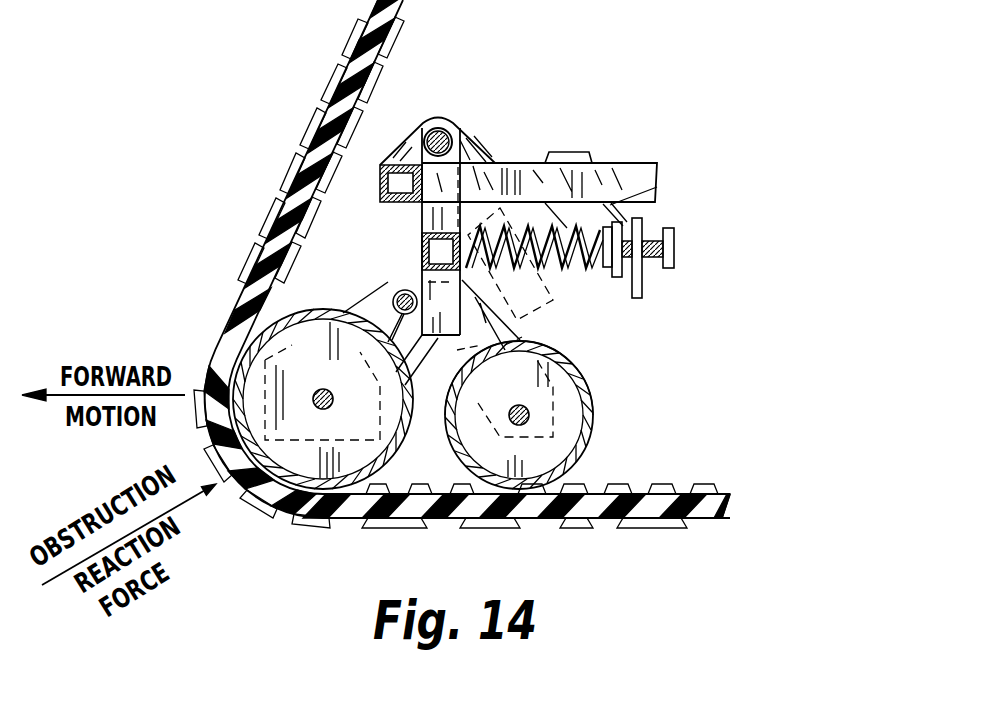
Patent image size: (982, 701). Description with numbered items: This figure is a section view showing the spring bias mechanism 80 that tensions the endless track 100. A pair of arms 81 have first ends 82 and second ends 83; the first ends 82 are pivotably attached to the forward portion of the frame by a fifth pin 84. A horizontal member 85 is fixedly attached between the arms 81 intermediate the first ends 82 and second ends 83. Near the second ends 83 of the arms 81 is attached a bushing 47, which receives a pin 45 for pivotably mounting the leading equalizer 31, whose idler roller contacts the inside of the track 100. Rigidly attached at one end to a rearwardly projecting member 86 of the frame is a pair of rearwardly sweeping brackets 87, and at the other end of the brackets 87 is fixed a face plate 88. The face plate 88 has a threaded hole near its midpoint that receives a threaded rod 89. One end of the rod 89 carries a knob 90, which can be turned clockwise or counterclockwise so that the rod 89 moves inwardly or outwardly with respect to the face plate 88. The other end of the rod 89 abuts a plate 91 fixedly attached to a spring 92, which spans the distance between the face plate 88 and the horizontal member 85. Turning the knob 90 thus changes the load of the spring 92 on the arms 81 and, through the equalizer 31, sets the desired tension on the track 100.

The endless track 100 is at (336, 104).
The bushing 47 is at (398, 330).
The second ends 83 is at (438, 340).
The leading equalizer 31 is at (608, 408).
The pin 45 is at (384, 281).
The arm 81 is at (420, 208).
The first ends 82 is at (452, 130).
The fifth pin 84 is at (441, 126).
The rearwardly projecting member 86 is at (620, 163).
The rearwardly sweeping brackets 87 is at (610, 205).
The horizontal member 85 is at (422, 243).
The spring 92 is at (510, 322).
The threaded rod 89 is at (658, 240).
The plate 91 is at (623, 278).
The face plate 88 is at (643, 272).
The knob 90 is at (676, 256).
The spring bias mechanism 80 is at (552, 98).